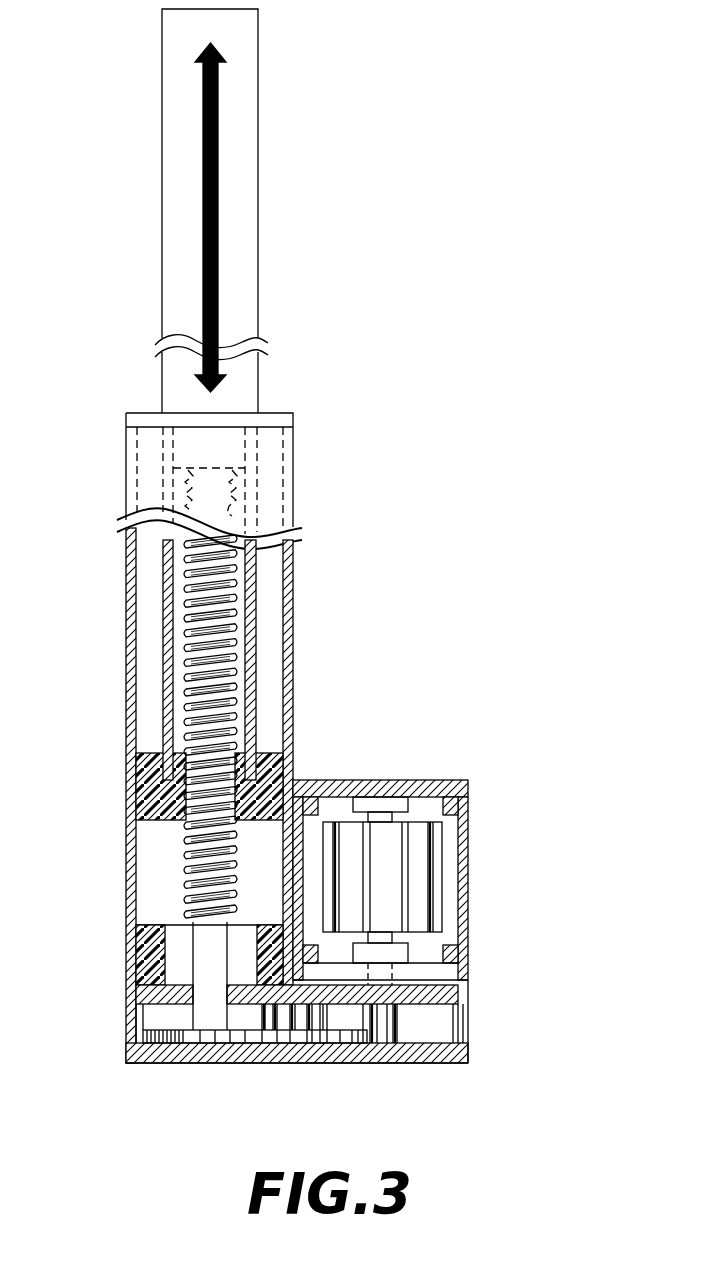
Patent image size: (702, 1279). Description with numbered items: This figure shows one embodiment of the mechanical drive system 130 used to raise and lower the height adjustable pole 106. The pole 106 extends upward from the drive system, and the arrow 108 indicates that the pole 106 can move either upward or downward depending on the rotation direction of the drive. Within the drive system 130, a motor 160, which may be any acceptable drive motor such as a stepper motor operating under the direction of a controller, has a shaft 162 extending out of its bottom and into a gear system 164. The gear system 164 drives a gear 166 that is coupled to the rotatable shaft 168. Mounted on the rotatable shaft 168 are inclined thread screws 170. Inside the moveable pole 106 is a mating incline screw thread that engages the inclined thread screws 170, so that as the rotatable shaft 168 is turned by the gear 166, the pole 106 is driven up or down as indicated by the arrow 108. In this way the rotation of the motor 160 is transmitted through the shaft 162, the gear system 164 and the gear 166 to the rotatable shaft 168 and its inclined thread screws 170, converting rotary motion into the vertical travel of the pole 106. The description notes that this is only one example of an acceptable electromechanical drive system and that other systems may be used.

The pole 106 is at (248, 56).
The arrow 108 is at (190, 133).
The mechanical drive system 130 is at (490, 751).
The motor 160 is at (420, 875).
The shaft 162 is at (390, 937).
The gear system 164 is at (347, 1037).
The gear 166 is at (233, 1037).
The rotatable shaft 168 is at (207, 997).
The inclined thread screws 170 is at (190, 876).